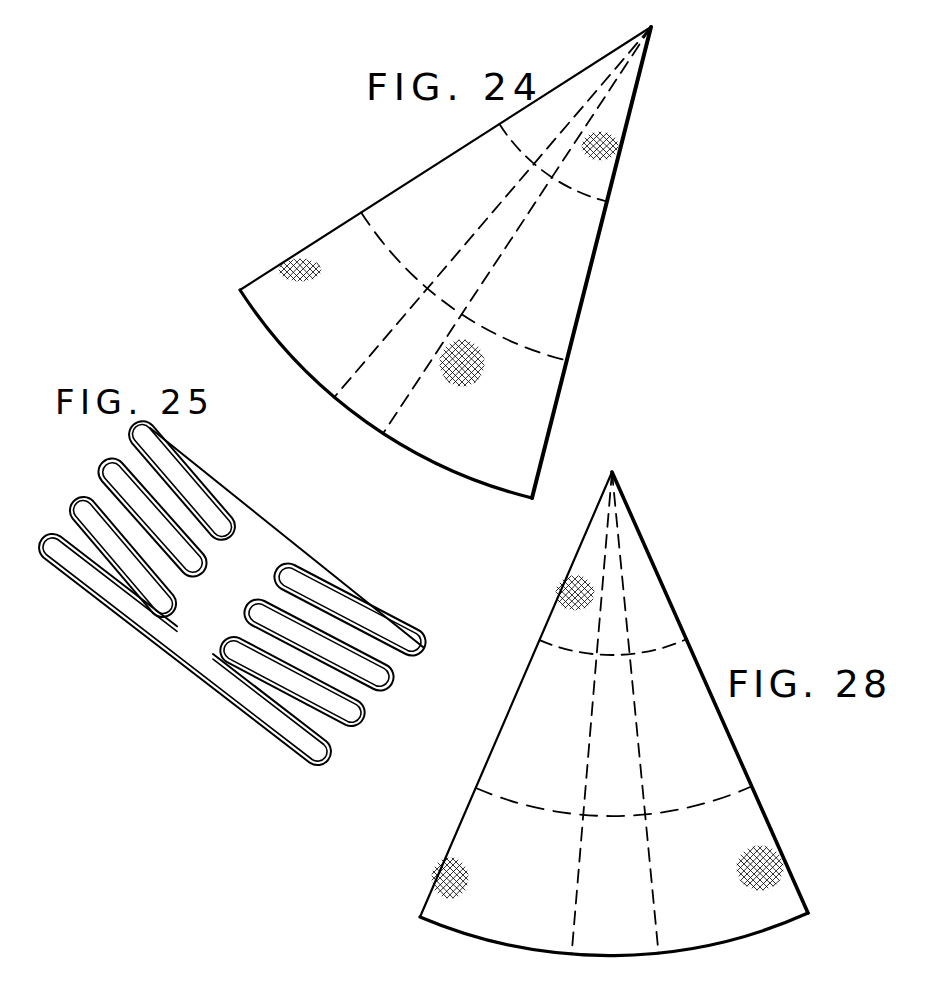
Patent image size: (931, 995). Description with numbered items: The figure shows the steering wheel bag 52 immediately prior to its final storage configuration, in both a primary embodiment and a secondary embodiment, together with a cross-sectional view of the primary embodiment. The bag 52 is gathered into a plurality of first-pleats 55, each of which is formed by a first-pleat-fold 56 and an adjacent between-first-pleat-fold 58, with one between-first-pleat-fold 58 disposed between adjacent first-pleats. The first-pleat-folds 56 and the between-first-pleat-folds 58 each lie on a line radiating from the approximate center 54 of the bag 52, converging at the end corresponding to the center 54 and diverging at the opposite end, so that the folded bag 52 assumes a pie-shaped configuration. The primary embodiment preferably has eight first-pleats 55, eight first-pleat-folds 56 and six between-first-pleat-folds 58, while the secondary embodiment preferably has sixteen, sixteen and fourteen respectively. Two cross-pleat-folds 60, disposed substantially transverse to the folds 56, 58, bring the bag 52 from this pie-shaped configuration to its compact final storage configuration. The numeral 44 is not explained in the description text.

In FIG. 24, the apex of conical sector 44 is at (651, 27).
In FIG. 24, the steering wheel bag 52 is at (594, 362).
In FIG. 28, the steering wheel bag 52 is at (766, 777).
In FIG. 28, the approximate center 54 is at (612, 472).
In FIG. 25, the first-pleats 55 is at (125, 633).
In FIG. 24, the first-pleat-folds 56 is at (403, 185).
In FIG. 25, the first-pleat-folds 56 is at (129, 434).
In FIG. 28, the first-pleat-folds 56 is at (552, 610).
In FIG. 24, the between-first-pleat-folds 58 is at (398, 320).
In FIG. 25, the between-first-pleat-folds 58 is at (234, 532).
In FIG. 28, the between-first-pleat-folds 58 is at (576, 882).
In FIG. 24, the cross-pleat-folds 60 is at (527, 160).
In FIG. 28, the cross-pleat-folds 60 is at (570, 653).